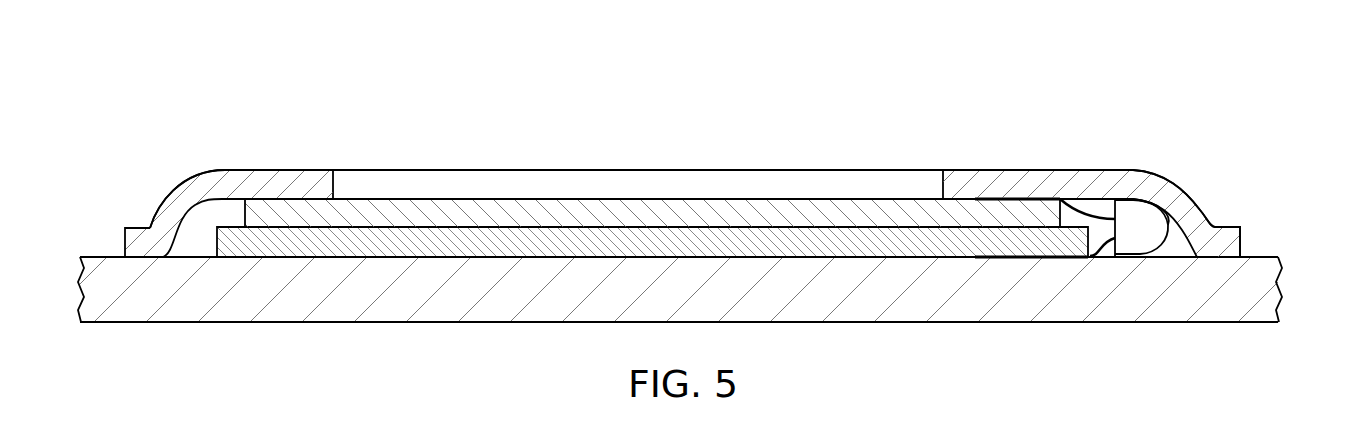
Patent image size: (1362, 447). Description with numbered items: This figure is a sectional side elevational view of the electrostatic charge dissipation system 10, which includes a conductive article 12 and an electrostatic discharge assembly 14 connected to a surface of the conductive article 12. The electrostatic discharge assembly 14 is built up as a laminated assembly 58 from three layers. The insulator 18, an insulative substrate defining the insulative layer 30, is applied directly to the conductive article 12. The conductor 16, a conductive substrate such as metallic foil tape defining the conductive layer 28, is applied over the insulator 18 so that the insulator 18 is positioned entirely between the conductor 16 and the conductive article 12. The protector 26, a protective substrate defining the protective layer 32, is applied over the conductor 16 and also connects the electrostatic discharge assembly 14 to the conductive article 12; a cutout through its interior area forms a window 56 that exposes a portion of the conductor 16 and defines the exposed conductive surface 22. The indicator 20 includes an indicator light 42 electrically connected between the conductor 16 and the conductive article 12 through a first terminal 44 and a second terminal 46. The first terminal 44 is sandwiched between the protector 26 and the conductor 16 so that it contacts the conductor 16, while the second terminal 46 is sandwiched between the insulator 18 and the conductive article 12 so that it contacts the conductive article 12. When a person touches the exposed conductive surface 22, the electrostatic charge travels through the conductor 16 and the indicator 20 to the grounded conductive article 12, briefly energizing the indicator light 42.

The electrostatic charge dissipation system 10 is at (1265, 93).
The conductive article 12 is at (290, 322).
The electrostatic discharge assembly 14 is at (1168, 158).
The conductor 16 is at (523, 219).
The insulator 18 is at (424, 257).
The indicator 20 is at (1173, 225).
The exposed conductive surface 22 is at (607, 199).
The protector 26 is at (968, 178).
The conductive layer 28 is at (127, 212).
The insulative layer 30 is at (83, 243).
The protective layer 32 is at (150, 183).
The indicator light 42 is at (1138, 245).
The first terminal 44 is at (1025, 197).
The second terminal 46 is at (1028, 258).
The window 56 is at (771, 178).
The laminated assembly 58 is at (196, 157).